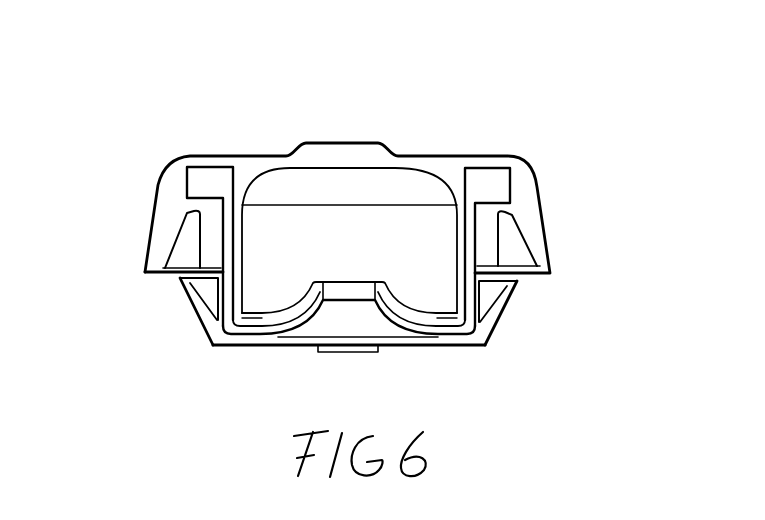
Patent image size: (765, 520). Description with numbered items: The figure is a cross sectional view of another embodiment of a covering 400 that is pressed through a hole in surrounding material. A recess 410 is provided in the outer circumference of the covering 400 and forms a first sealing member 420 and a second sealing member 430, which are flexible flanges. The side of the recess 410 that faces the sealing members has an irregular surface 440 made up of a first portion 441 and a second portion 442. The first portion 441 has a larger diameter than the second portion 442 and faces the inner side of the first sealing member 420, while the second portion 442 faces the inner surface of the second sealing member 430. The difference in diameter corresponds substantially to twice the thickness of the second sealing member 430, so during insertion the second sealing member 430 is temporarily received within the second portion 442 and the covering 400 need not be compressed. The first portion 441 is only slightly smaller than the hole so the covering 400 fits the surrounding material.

The covering 400 is at (500, 73).
The recess 410 is at (515, 248).
The first sealing member 420 is at (530, 230).
The second sealing member 430 is at (497, 306).
The irregular surface 440 is at (502, 247).
The first portion 441 is at (197, 247).
The second portion 442 is at (213, 298).